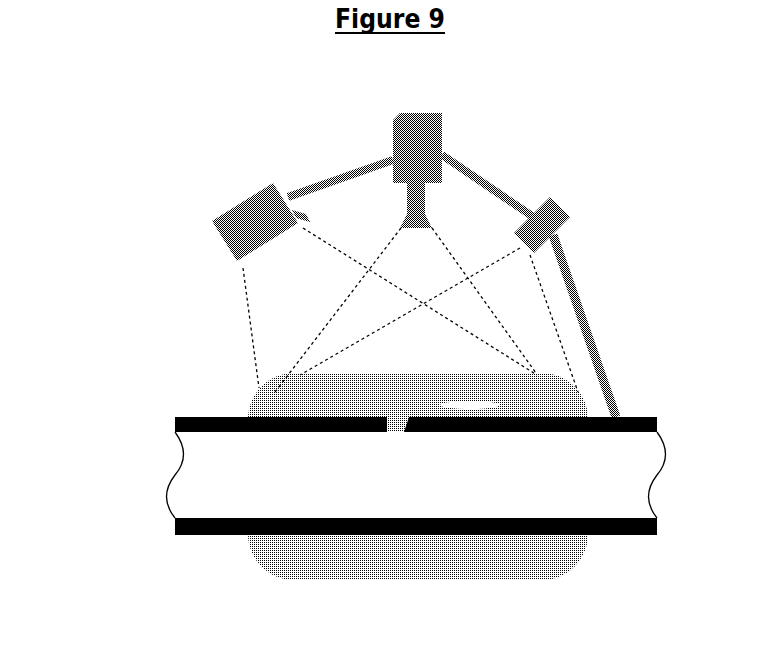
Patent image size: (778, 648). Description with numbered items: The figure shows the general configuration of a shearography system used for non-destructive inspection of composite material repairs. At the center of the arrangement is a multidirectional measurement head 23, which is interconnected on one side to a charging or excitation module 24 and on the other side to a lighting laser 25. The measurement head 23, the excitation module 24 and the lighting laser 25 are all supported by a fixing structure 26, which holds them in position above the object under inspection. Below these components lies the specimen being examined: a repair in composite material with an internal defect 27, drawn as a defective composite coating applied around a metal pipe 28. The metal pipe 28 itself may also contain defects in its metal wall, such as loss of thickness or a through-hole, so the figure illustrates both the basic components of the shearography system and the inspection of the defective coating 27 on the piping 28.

The multidirectional measurement head 23 is at (443, 150).
The charging or excitation module 24 is at (240, 197).
The lighting laser 25 is at (563, 205).
The fixing structure 26 is at (605, 365).
The repair in composite material with internal defect 27 is at (485, 553).
The metal pipe with through-hole 28 is at (200, 417).